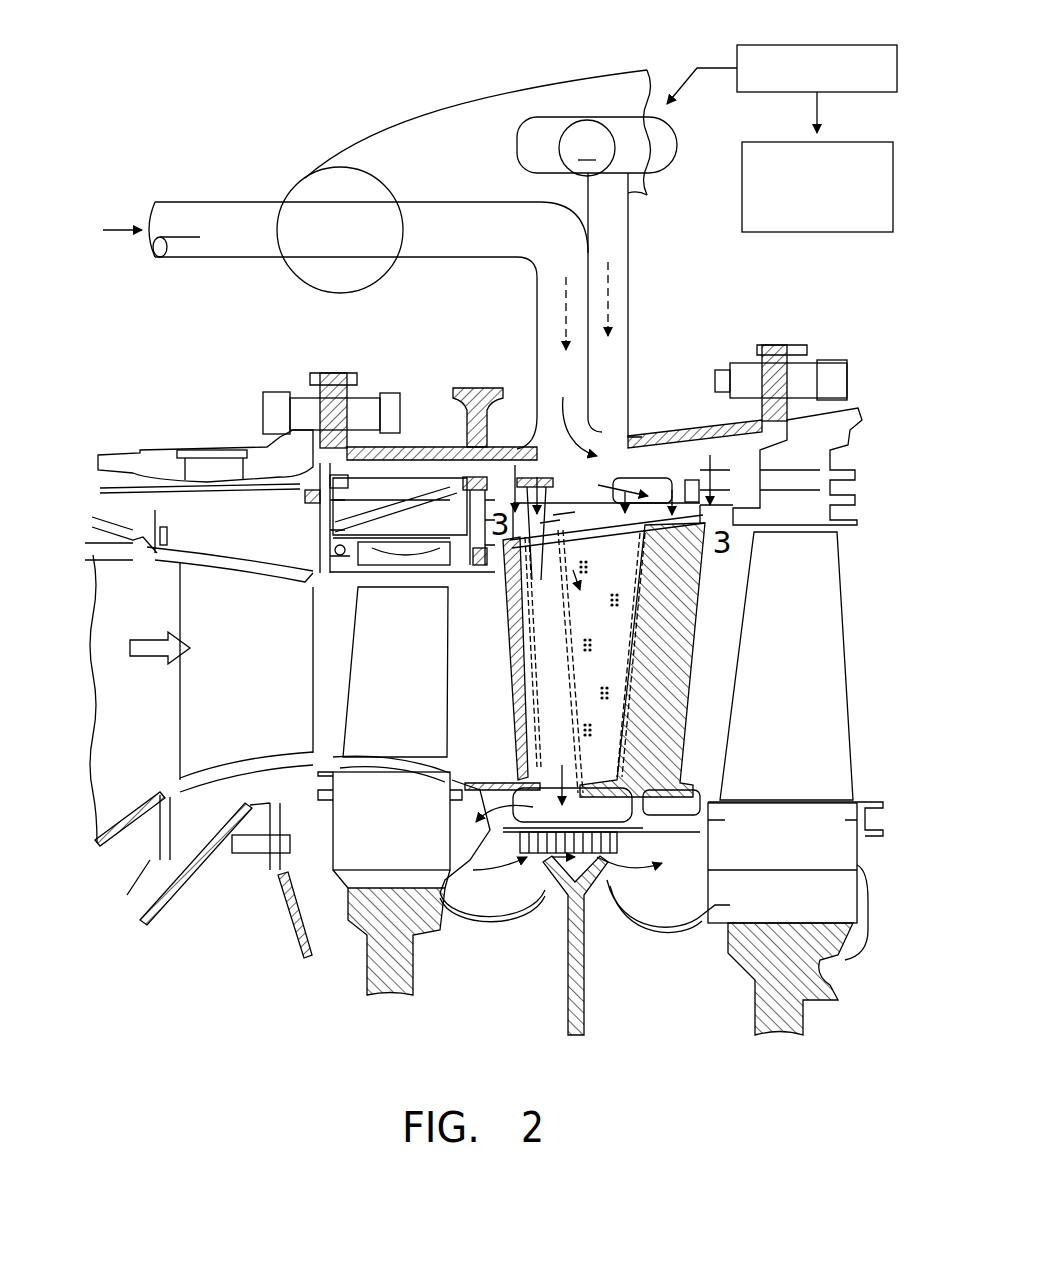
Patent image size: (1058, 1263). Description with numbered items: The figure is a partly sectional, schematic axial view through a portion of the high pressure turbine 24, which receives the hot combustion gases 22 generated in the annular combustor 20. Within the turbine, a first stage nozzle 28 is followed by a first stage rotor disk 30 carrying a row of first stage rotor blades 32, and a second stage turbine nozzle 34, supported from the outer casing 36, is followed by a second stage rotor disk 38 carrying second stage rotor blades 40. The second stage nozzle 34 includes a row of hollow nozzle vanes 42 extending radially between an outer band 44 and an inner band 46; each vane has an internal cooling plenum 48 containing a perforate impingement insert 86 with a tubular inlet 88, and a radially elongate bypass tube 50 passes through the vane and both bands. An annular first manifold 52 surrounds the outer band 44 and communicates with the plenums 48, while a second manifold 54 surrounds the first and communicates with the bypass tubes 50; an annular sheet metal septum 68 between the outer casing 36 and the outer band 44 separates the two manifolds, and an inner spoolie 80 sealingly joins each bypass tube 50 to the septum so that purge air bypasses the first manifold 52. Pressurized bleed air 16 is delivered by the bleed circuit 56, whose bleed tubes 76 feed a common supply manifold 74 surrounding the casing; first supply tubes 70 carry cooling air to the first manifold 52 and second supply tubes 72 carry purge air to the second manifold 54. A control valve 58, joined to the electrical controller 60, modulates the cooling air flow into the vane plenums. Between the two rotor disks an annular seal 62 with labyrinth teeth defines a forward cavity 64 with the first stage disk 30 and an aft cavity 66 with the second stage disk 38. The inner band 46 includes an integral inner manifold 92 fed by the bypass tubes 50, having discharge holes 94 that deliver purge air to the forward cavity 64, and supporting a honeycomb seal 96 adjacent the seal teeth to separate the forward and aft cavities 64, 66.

The pressurized bleed air 16 is at (103, 230).
The annular combustor 20 is at (119, 734).
The hot combustion gases 22 is at (157, 637).
The high pressure turbine 24 is at (167, 369).
The first stage nozzle 28 is at (237, 706).
The first stage rotor disk 30 is at (412, 970).
The first stage rotor blades 32 is at (379, 719).
The second stage turbine nozzle 34 is at (623, 667).
The outer casing 36 is at (647, 430).
The second stage rotor disk 38 is at (757, 1005).
The second stage rotor blades 40 is at (779, 767).
The hollow nozzle vanes 42 is at (589, 667).
The outer band 44 is at (665, 527).
The inner band 46 is at (687, 783).
The internal cooling cavity or plenum 48 is at (637, 640).
The bypass tube 50 is at (532, 650).
The first manifold 52 is at (630, 486).
The second manifold 54 is at (625, 474).
The bleed circuit 56 is at (262, 194).
The control valve 58 is at (665, 118).
The electrical controller 60 is at (782, 45).
The annular seal 62 is at (584, 953).
The forward cavity 64 is at (481, 906).
The aft cavity 66 is at (647, 907).
The sheet metal septum 68 is at (690, 482).
The first supply tubes 70 is at (630, 223).
The second supply tubes 72 is at (598, 291).
The common supply manifold 74 is at (324, 244).
The bleed tubes 76 is at (217, 259).
The inner spoolie 80 is at (540, 553).
The impingement insert or baffle 86 is at (581, 684).
The tubular inlet 88 is at (567, 514).
The inner manifold 92 is at (577, 822).
The discharge holes 94 is at (480, 838).
The honeycomb seal 96 is at (620, 852).